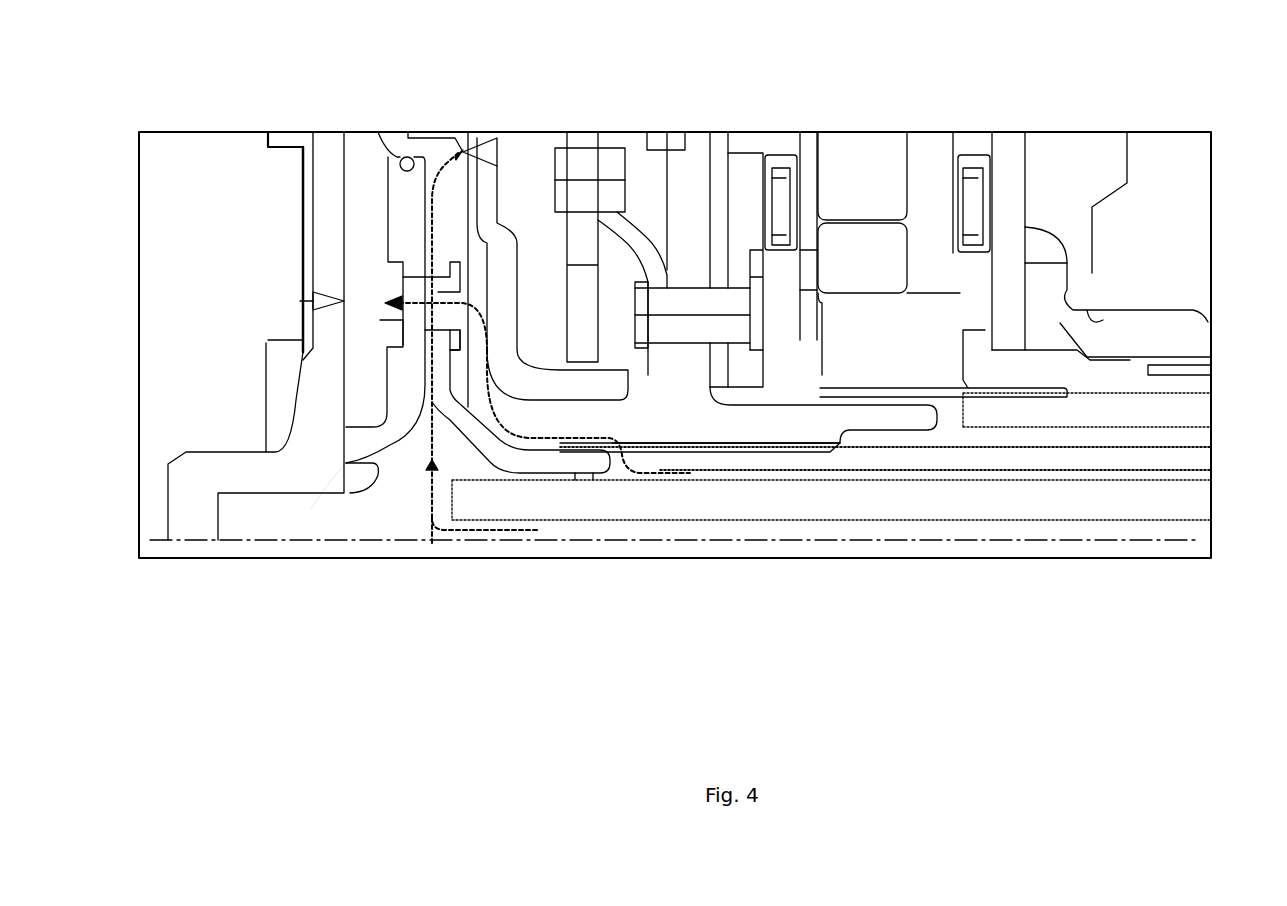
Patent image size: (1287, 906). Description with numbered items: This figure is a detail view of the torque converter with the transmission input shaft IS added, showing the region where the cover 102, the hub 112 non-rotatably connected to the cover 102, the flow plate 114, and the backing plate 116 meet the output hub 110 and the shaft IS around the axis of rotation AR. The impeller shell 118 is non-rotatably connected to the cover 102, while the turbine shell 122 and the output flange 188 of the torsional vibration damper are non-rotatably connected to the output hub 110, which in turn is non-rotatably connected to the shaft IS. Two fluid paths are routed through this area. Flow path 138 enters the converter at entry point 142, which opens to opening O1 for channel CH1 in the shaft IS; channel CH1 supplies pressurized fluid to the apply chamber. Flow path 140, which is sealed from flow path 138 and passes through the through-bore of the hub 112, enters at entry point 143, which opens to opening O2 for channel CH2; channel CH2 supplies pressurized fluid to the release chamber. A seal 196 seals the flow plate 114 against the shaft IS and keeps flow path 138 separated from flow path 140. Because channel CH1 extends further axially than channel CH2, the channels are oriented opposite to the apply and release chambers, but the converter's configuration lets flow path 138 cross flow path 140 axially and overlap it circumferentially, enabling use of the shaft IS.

The cover 102 is at (330, 230).
The output hub 110 is at (877, 423).
The hub 112 is at (369, 438).
The flow plate 114 is at (460, 150).
The backing plate 116 is at (494, 200).
The impeller shell 118 is at (1012, 168).
The turbine shell 122 is at (807, 138).
The flow path 138 is at (430, 503).
The flow path 140 is at (413, 302).
The entry point 142 is at (423, 443).
The entry point 143 is at (570, 446).
The output flange 188 is at (667, 137).
The seal 196 is at (585, 480).
The opening O1 is at (436, 548).
The opening O2 is at (657, 480).
The channel CH1 is at (697, 552).
The channel CH2 is at (807, 477).
The transmission input shaft IS is at (1165, 385).
The axis of rotation AR is at (1165, 548).